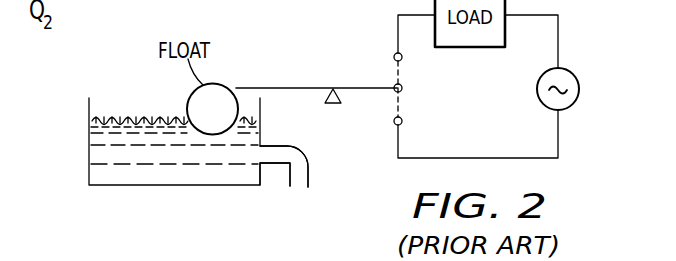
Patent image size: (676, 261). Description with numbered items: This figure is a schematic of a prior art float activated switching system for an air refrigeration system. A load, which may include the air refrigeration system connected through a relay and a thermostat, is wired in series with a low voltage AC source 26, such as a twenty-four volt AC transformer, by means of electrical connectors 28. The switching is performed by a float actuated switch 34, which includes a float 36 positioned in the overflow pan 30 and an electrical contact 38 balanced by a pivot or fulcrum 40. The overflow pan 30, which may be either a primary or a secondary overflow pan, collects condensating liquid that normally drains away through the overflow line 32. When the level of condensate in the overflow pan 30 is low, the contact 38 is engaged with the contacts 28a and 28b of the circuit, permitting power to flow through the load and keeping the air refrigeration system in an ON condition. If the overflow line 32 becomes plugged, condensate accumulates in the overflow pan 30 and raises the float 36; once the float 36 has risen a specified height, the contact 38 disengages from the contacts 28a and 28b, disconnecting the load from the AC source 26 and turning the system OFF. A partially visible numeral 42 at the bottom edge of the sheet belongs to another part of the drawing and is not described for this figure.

The AC power source 26 is at (579, 91).
The electrical connectors 28 is at (558, 36).
The contact 28a is at (402, 60).
The contact 28b is at (401, 124).
The overflow pan 30 is at (89, 152).
The overflow line 32 is at (308, 172).
The float actuated switch 34 is at (307, 88).
The float 36 is at (188, 100).
The electrical contact 38 is at (394, 87).
The pivot or fulcrum 40 is at (335, 104).
The partial numeral 42 is at (160, 252).